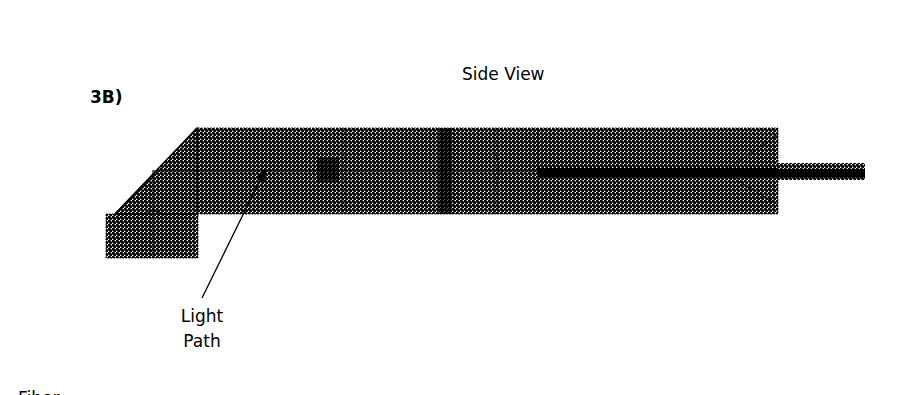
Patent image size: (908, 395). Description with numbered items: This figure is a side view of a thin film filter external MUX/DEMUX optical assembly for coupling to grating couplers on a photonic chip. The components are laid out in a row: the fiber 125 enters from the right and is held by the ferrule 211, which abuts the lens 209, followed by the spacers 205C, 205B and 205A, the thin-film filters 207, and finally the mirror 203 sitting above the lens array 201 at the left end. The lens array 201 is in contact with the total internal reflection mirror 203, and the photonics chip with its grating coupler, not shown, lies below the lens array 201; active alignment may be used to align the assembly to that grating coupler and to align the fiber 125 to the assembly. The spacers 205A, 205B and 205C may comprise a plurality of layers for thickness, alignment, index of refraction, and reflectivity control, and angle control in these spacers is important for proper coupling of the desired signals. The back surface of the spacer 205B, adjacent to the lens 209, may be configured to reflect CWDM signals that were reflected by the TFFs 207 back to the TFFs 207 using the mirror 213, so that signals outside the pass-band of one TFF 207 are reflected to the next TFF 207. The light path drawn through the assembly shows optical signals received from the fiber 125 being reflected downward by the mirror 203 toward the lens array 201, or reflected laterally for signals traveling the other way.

The lens array 201 is at (106, 230).
The mirror 203 is at (137, 177).
The spacer 205A is at (240, 145).
The thin film filters (TFFs) 207 is at (320, 185).
The spacer 205B is at (388, 213).
The mirror 213 is at (445, 128).
The spacer 205C is at (460, 213).
The lens 209 is at (520, 213).
The ferrule 211 is at (697, 210).
The fiber 125 is at (840, 180).